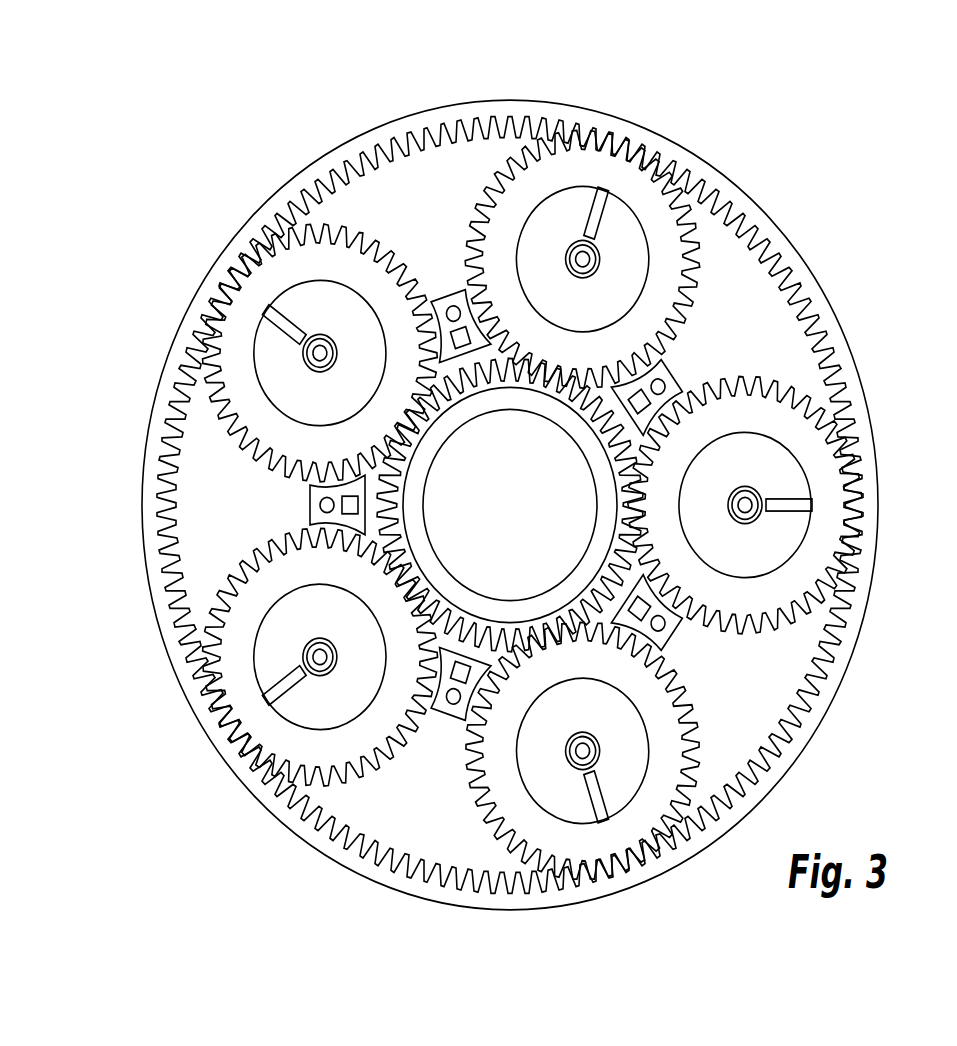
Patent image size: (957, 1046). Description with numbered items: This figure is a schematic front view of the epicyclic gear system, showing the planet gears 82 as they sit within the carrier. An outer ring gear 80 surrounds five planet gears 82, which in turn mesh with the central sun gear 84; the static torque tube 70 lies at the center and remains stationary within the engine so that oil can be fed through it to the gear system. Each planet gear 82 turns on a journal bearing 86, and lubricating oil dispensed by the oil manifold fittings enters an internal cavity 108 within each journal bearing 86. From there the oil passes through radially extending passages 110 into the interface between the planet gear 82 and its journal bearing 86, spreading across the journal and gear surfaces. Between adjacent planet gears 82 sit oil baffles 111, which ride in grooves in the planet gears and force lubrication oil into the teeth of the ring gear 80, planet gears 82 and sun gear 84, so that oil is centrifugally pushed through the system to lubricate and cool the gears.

The static torque tube 70 is at (455, 420).
The ring gear 80 is at (715, 190).
The planet gears 82 is at (674, 226).
The sun gear 84 is at (400, 533).
The journal bearing 86 is at (371, 367).
The internal cavities 108 is at (567, 258).
The radially extending passages 110 is at (592, 193).
The oil baffles 111 is at (312, 512).